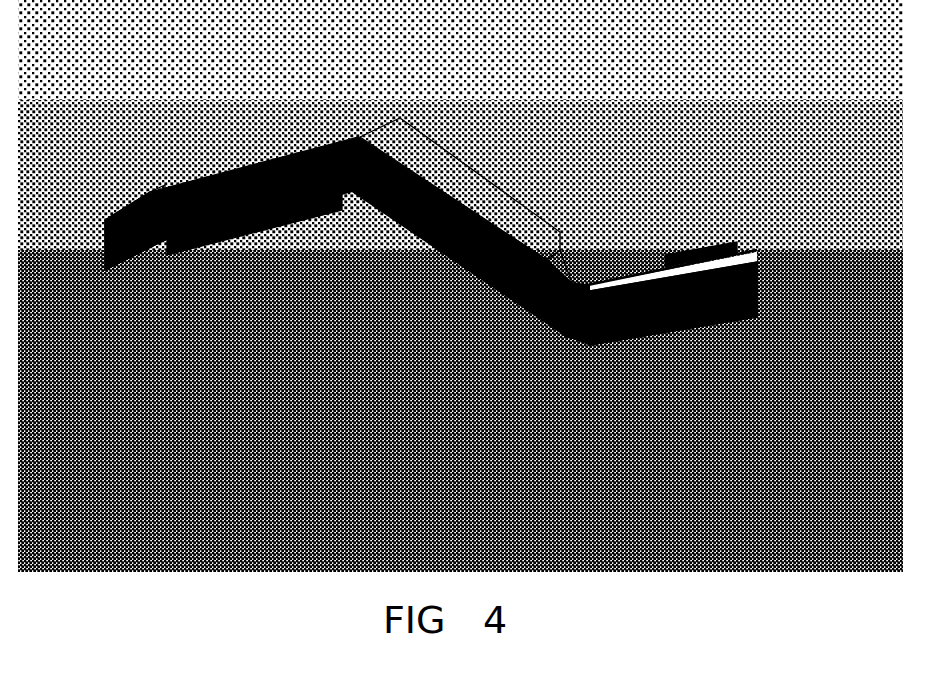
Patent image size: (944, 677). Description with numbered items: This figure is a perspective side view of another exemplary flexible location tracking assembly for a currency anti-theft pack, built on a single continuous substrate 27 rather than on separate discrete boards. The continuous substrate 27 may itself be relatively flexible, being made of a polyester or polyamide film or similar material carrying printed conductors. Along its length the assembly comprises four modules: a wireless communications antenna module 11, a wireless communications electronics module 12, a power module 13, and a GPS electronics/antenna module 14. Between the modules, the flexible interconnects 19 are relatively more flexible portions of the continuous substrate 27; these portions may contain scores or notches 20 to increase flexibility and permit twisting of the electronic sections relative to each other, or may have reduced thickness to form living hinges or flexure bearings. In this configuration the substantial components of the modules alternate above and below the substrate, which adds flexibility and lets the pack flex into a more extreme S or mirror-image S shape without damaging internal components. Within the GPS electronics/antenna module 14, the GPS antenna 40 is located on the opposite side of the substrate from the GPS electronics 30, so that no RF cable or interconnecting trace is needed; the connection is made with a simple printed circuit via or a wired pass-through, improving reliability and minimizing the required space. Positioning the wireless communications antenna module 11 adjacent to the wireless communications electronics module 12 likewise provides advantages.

The wireless communications antenna module 11 is at (120, 211).
The wireless communications electronics module 12 is at (247, 236).
The power module 13 is at (463, 173).
The GPS electronics/antenna module 14 is at (643, 240).
The flexible interconnect 19 is at (132, 258).
The scores or notches 20 is at (148, 190).
The continuous substrate 27 is at (367, 137).
The GPS electronics 30 is at (710, 248).
The GPS antenna 40 is at (720, 323).